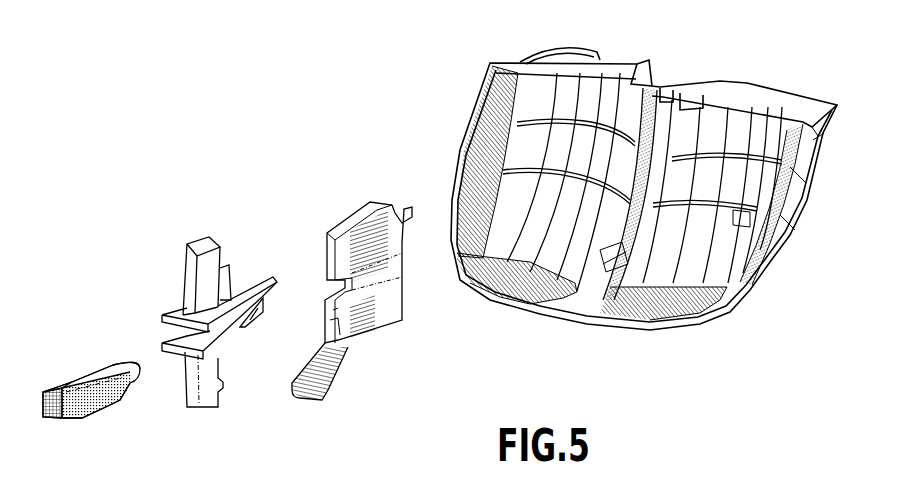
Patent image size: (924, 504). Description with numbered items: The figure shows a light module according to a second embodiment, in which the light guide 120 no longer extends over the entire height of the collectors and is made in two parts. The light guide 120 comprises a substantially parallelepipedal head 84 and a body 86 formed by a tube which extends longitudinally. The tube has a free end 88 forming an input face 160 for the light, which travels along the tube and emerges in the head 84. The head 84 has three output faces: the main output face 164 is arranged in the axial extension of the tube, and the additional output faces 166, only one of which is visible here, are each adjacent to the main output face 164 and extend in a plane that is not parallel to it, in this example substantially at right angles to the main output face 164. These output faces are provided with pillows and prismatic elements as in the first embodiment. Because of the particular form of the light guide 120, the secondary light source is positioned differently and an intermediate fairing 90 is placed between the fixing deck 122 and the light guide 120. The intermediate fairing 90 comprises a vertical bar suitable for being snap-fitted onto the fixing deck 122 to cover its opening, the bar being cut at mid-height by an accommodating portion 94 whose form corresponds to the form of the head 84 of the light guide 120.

The light guide 120 is at (89, 357).
The head 84 is at (62, 388).
The body 86 is at (110, 368).
The free end 88 is at (127, 393).
The input face 160 is at (141, 368).
The main output face 164 is at (55, 419).
The additional output face 166 is at (98, 410).
The intermediate fairing 90 is at (248, 270).
The accommodating portion 94 is at (237, 347).
The fixing deck 122 is at (378, 343).